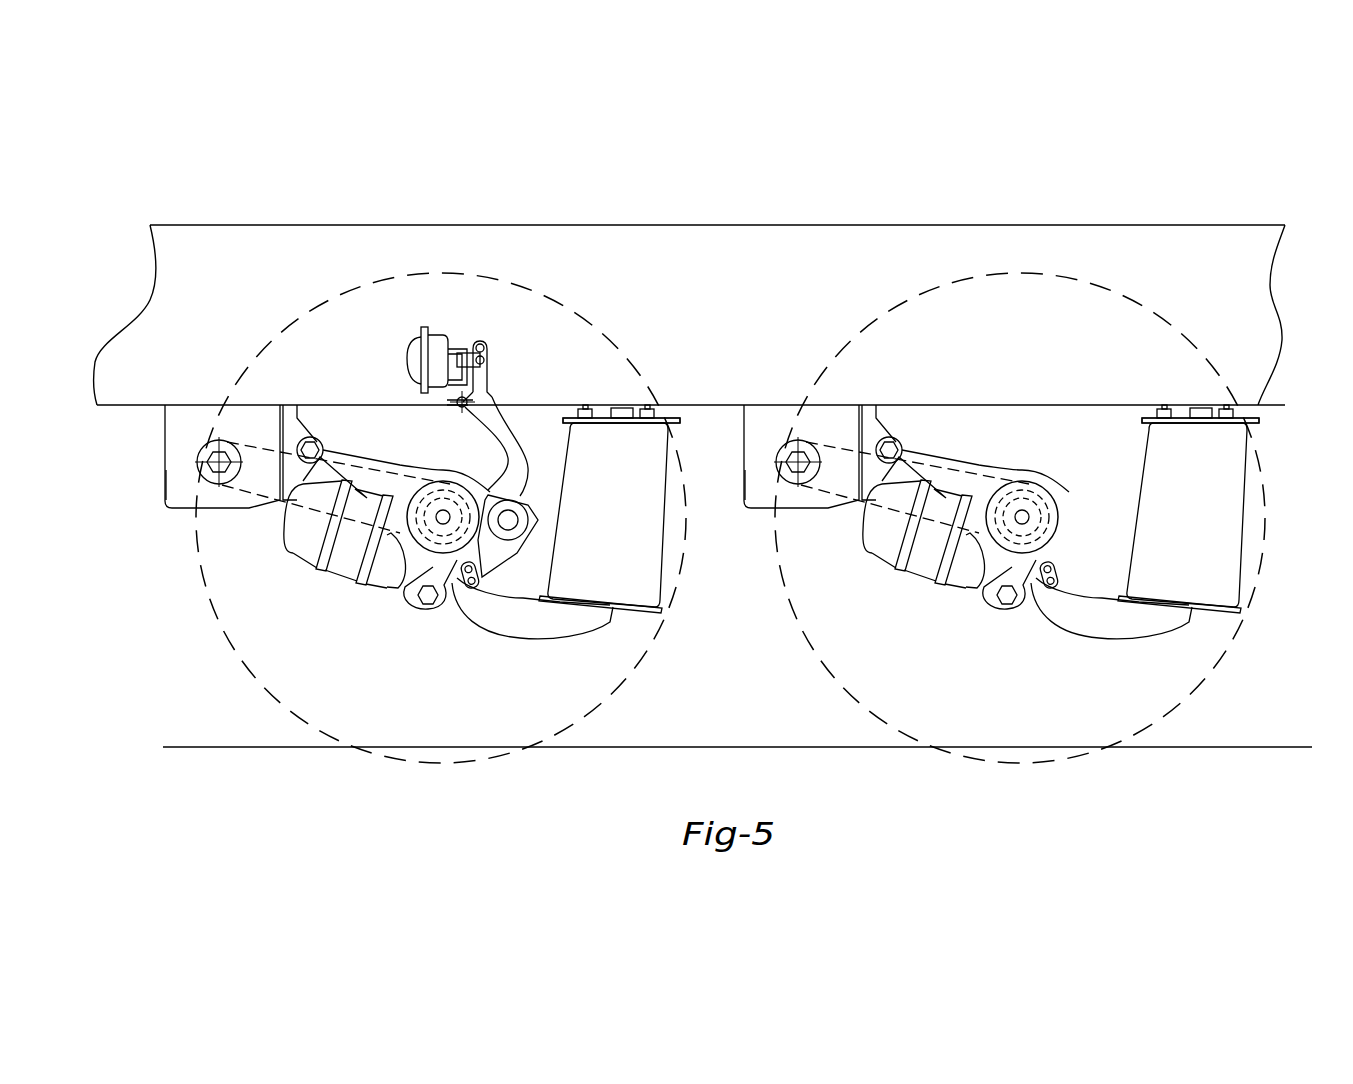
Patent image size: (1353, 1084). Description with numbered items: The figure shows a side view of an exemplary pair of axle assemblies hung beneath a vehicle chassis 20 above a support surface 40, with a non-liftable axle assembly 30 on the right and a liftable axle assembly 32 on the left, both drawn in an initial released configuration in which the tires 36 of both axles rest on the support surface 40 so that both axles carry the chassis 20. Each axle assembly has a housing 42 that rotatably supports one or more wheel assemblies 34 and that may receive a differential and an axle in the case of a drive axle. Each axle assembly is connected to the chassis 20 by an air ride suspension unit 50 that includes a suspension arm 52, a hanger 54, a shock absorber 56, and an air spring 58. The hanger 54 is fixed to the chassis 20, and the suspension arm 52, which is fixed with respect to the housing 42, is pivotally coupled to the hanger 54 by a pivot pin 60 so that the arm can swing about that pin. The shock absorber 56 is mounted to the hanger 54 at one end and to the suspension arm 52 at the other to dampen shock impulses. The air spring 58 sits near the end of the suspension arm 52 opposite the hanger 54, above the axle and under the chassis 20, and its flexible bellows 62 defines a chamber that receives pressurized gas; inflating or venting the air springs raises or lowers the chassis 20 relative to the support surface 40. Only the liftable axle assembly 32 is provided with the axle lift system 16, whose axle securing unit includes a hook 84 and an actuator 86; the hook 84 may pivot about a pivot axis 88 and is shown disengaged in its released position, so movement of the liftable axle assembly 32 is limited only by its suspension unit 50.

The axle lift system 16 is at (472, 373).
The chassis 20 is at (760, 224).
The non-liftable axle assembly 30 is at (977, 266).
The liftable axle assembly 32 is at (399, 268).
The wheel assembly 34 is at (700, 466).
The tire 36 is at (700, 466).
The support surface 40 is at (735, 746).
The housing 42 is at (454, 480).
The suspension unit 50 is at (160, 476).
The suspension arm 52 is at (495, 637).
The hanger 54 is at (176, 498).
The shock absorber 56 is at (364, 472).
The air spring 58 is at (679, 420).
The pivot pin 60 is at (203, 464).
The flexible bellows 62 is at (626, 506).
The hook 84 is at (523, 440).
The actuator 86 is at (407, 358).
The pivot axis 88 is at (488, 398).